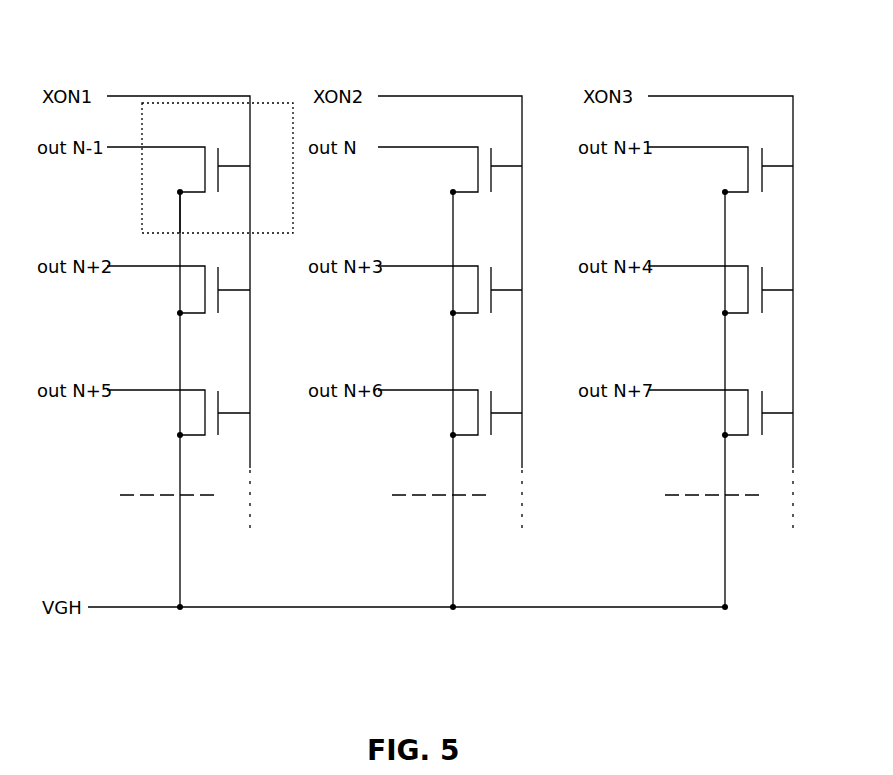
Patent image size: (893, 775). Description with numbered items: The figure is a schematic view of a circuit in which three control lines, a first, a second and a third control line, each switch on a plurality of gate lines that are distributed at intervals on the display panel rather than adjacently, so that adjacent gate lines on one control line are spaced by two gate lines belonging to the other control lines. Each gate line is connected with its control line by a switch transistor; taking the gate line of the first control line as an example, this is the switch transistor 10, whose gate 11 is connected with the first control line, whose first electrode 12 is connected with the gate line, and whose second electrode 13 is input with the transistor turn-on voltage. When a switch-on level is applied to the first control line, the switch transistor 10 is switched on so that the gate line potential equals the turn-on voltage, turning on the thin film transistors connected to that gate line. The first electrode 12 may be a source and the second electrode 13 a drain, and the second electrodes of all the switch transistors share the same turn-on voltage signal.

The switch transistor 10 is at (267, 104).
The gate 11 is at (253, 170).
The first electrode 12 is at (156, 155).
The second electrode 13 is at (174, 201).